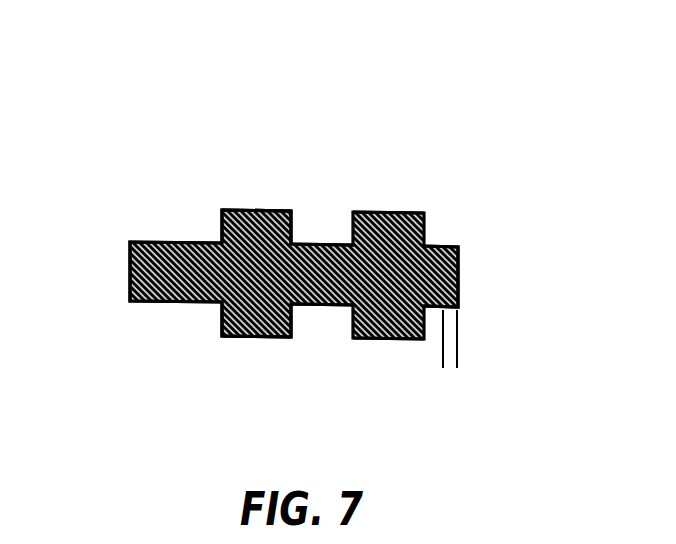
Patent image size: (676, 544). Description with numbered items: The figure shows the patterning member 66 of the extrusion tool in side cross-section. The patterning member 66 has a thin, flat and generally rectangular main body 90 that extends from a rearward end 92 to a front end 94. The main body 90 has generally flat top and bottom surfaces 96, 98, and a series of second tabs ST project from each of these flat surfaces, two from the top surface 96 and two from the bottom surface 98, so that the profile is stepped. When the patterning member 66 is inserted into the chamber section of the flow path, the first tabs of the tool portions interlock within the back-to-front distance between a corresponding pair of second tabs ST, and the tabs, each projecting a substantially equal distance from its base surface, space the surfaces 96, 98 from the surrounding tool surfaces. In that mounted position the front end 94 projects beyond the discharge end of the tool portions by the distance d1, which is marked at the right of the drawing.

The patterning member 66 is at (197, 145).
The main body 90 is at (219, 334).
The rearward end 92 is at (130, 272).
The front end 94 is at (460, 277).
The top surface 96 is at (322, 243).
The bottom surface 98 is at (320, 305).
The second tabs ST is at (253, 210).
The distance d1 is at (388, 353).